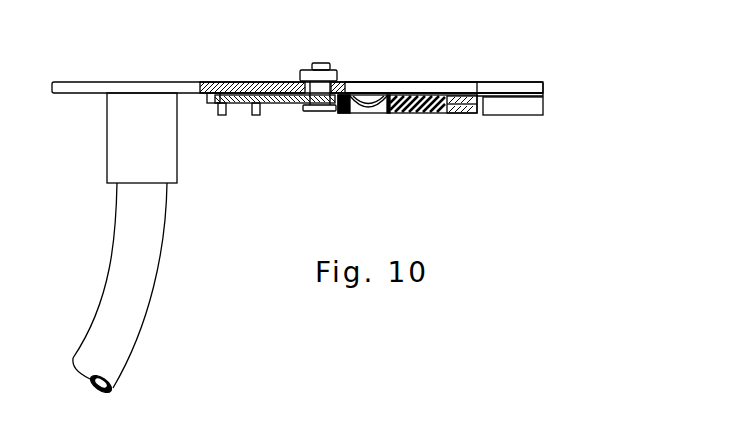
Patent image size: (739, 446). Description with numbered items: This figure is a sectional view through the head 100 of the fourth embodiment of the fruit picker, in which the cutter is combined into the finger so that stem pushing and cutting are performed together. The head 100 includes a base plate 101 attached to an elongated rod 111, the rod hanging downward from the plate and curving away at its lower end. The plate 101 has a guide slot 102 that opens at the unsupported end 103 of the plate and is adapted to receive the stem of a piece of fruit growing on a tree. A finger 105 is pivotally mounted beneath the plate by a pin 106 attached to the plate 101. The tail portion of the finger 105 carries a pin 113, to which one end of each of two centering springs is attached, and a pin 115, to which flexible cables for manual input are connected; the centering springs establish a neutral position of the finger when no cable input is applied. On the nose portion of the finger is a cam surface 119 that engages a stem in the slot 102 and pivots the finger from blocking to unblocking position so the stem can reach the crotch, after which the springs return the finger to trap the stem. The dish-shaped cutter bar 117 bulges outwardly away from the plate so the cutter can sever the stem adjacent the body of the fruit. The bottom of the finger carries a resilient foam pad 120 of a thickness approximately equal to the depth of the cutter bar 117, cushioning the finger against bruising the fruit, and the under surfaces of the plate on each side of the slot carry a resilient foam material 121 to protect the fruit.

The head 100 is at (134, 53).
The base plate 101 is at (266, 80).
The guide slot 102 is at (418, 82).
The unsupported end 103 is at (544, 88).
The finger 105 is at (286, 106).
The pin 106 is at (323, 63).
The elongated rod 111 is at (123, 217).
The pin 113 is at (253, 114).
The pin 115 is at (218, 114).
The dish-shaped cutter bar 117 is at (377, 108).
The cam surface 119 is at (472, 95).
The resilient foam pad 120 is at (467, 108).
The resilient foam material 121 is at (515, 108).